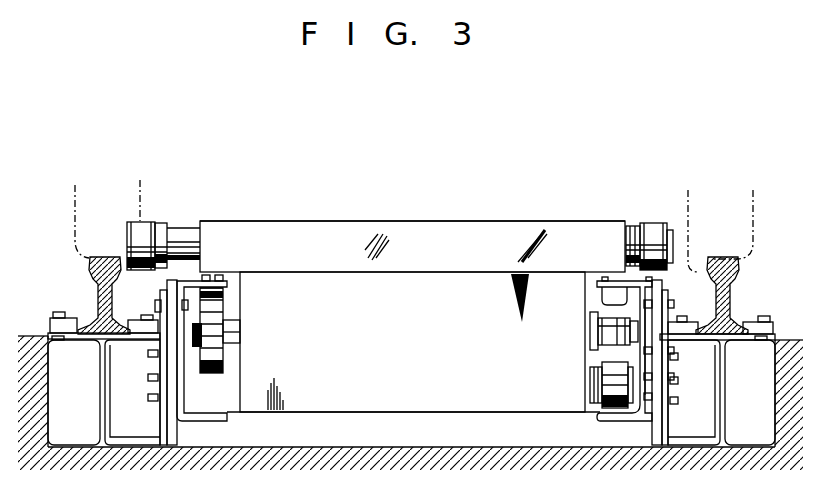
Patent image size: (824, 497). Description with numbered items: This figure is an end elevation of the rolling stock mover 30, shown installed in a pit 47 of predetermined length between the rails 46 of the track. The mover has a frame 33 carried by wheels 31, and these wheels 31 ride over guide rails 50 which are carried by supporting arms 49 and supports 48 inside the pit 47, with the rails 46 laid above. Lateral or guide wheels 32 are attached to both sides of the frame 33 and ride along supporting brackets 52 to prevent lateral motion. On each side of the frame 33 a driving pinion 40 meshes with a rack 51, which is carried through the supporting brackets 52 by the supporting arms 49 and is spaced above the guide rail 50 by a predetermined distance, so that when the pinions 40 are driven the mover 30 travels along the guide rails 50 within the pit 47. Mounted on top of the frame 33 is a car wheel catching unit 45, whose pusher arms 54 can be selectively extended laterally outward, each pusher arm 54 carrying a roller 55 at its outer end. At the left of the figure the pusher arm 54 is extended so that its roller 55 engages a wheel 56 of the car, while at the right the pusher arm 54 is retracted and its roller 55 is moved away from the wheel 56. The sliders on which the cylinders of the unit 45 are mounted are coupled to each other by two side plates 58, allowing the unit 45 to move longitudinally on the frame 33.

The rolling stock mover 30 is at (421, 357).
The wheels 31 is at (607, 380).
The lateral or guide wheels 32 is at (608, 328).
The frame 33 is at (374, 402).
The driving pinion 40 is at (210, 368).
The car wheel catching unit 45 is at (303, 222).
The rails 46 is at (90, 266).
The pit 47 is at (442, 448).
The supports 48 is at (80, 340).
The supporting arms 49 is at (117, 406).
The guide rails 50 is at (217, 418).
The rack 51 is at (222, 290).
The supporting brackets 52 is at (178, 289).
The pusher arms 54 is at (188, 231).
The roller 55 is at (147, 225).
The wheels of the car 56 is at (80, 186).
The side plates 58 is at (412, 232).